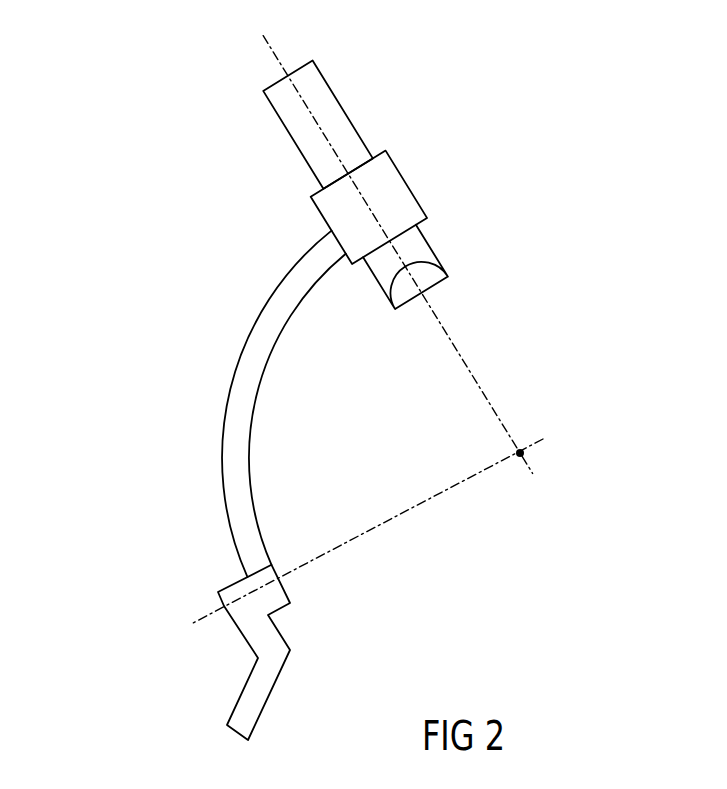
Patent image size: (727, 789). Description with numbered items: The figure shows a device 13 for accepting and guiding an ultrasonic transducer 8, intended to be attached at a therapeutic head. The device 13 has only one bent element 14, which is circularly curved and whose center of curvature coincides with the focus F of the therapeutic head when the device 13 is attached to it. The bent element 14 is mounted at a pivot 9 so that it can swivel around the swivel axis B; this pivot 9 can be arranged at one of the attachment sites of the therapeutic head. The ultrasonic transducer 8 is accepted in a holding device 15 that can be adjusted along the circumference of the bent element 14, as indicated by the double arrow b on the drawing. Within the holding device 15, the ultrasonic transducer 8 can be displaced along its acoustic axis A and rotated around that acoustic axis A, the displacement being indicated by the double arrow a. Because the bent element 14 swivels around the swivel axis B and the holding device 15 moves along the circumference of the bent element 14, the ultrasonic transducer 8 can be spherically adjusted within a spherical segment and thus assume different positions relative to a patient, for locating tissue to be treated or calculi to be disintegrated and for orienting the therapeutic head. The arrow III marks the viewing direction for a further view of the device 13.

The ultrasonic transducer 8 is at (337, 118).
The holding device 15 is at (393, 193).
The bent element 14 is at (245, 382).
The pivot 9 is at (255, 693).
The device 13 is at (222, 265).
The acoustic axis A is at (468, 368).
The swivel axis B is at (382, 525).
The focus F is at (521, 450).
The double arrow a is at (442, 223).
The arm displacement direction b is at (288, 230).
The view direction of FIG. 3 III is at (180, 510).